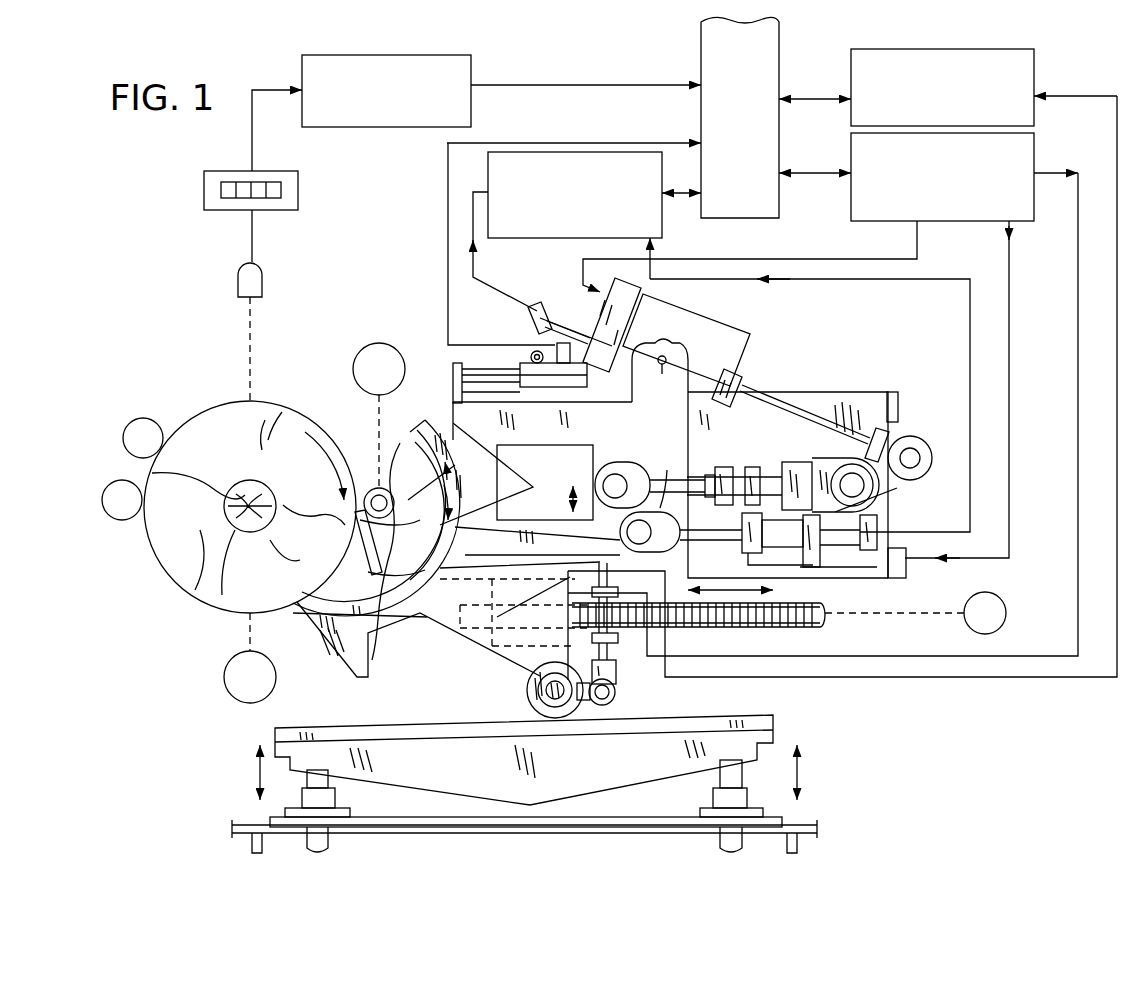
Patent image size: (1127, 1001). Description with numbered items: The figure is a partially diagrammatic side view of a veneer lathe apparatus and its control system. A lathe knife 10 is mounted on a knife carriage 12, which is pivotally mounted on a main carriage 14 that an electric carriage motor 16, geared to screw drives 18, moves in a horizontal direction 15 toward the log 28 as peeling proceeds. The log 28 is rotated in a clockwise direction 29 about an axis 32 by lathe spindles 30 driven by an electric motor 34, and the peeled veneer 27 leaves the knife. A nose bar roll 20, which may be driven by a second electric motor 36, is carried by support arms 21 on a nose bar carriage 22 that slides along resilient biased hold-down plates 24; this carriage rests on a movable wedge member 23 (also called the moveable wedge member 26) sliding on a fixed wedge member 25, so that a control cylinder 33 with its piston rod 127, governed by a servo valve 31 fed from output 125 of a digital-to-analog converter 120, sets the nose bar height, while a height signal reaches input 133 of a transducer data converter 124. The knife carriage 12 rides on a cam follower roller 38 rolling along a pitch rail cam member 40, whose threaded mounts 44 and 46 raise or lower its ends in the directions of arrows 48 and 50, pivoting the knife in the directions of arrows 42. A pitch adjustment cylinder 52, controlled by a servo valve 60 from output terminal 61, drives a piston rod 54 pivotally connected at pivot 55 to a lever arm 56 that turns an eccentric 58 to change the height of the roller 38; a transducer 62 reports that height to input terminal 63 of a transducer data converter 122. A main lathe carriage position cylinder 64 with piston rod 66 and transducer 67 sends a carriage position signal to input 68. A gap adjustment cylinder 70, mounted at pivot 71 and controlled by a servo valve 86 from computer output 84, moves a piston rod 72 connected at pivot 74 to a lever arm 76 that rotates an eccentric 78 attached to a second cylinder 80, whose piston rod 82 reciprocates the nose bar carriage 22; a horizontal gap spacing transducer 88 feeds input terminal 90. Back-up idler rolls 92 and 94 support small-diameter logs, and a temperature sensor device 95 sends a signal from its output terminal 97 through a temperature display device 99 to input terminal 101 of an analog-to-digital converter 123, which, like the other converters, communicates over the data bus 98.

The lathe knife 10 is at (355, 545).
The knife carriage 12 is at (543, 488).
The main carriage 14 is at (628, 402).
The horizontal direction 15 is at (733, 583).
The electric carriage motor 16 is at (1005, 610).
The screw drives 18 is at (795, 627).
The nose bar roll 20 is at (440, 456).
The support arms 21 is at (388, 490).
The nose bar carriage 22 is at (590, 455).
The movable wedge member 23 is at (540, 530).
The resilient biased hold-down plates 24 is at (548, 440).
The fixed wedge member 25 is at (490, 592).
The moveable wedge member 26 is at (568, 583).
The veneer 27 is at (383, 626).
The log 28 is at (175, 585).
The clockwise direction 29 is at (335, 478).
The lathe spindles 30 is at (245, 480).
The servo valve 31 is at (812, 568).
The axis 32 is at (225, 513).
The control cylinder 33 is at (809, 540).
The electric motor 34 is at (230, 675).
The second electric motor 36 is at (362, 345).
The cam follower roller 38 is at (528, 700).
The pitch rail cam member 40 is at (725, 715).
The arrows 42 is at (458, 510).
The threaded mount 44 is at (335, 797).
The threaded mount 46 is at (713, 797).
The arrow 48 is at (255, 760).
The arrow 50 is at (802, 779).
The pitch adjustment cylinder 52 is at (598, 612).
The piston rod 54 is at (607, 650).
The pivot 55 is at (617, 695).
The lever arm 56 is at (578, 702).
The eccentric 58 is at (540, 686).
The servo valve 60 is at (515, 612).
The output terminal 61 is at (1072, 170).
The transducer 62 is at (642, 480).
The input terminal 63 is at (1072, 92).
The main lathe carriage position cylinder 64 is at (453, 392).
The piston rod 66 is at (520, 368).
The transducer 67 is at (540, 330).
The input 68 is at (448, 300).
The gap adjustment cylinder 70 is at (712, 355).
The pivot 71 is at (662, 378).
The piston rod 72 is at (790, 403).
The pivot 74 is at (915, 450).
The lever arm 76 is at (892, 490).
The eccentric 78 is at (845, 468).
The second cylinder 80 is at (742, 462).
The piston rod 82 is at (703, 485).
The computer output 84 is at (700, 259).
The servo valve 86 is at (632, 294).
The horizontal gap spacing transducer 88 is at (568, 315).
The input terminal 90 is at (473, 218).
The back-up idler roll 92 is at (148, 418).
The back-up idler roll 94 is at (118, 522).
The temperature sensor device 95 is at (262, 288).
The output terminal 97 is at (252, 230).
The data bus 98 is at (701, 120).
The temperature display device 99 is at (298, 185).
The input terminal 101 is at (248, 141).
The digital-to-analog converter 120 is at (851, 197).
The transducer data converter 122 is at (851, 55).
The analog-to-digital converter 123 is at (388, 127).
The transducer data converter 124 is at (543, 152).
The output 125 is at (1009, 267).
The piston rod 127 is at (667, 476).
The input 133 is at (970, 316).